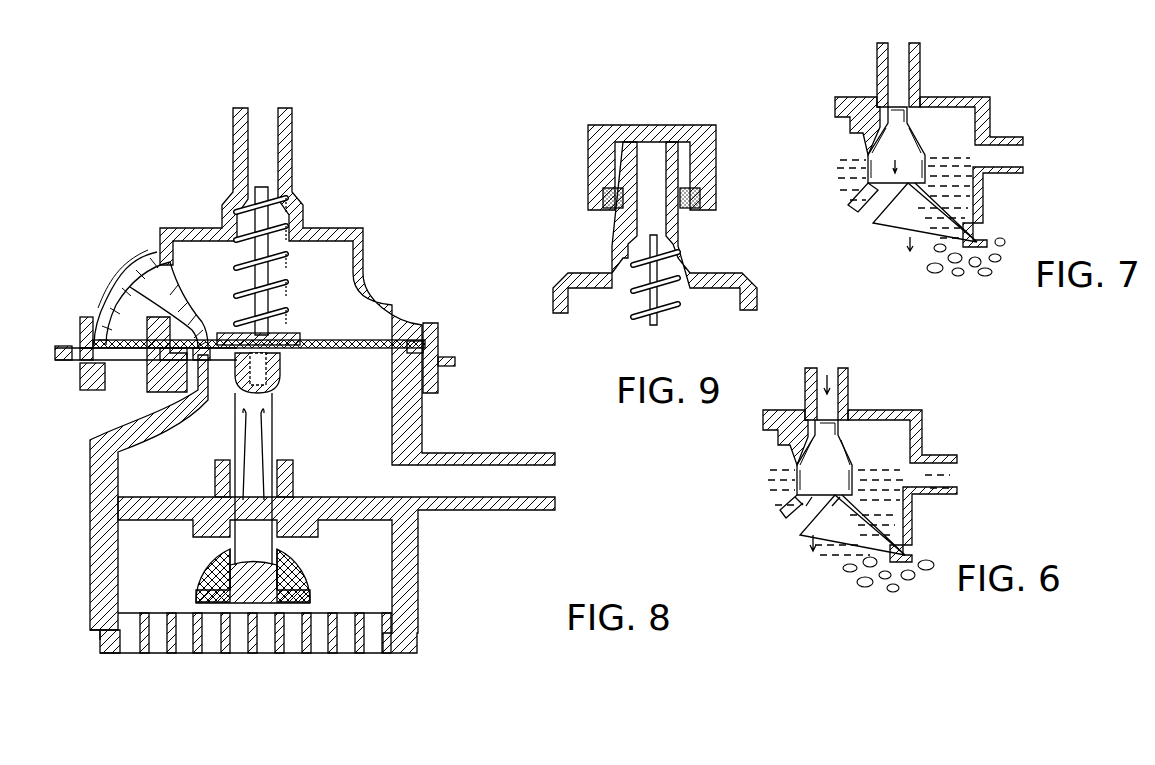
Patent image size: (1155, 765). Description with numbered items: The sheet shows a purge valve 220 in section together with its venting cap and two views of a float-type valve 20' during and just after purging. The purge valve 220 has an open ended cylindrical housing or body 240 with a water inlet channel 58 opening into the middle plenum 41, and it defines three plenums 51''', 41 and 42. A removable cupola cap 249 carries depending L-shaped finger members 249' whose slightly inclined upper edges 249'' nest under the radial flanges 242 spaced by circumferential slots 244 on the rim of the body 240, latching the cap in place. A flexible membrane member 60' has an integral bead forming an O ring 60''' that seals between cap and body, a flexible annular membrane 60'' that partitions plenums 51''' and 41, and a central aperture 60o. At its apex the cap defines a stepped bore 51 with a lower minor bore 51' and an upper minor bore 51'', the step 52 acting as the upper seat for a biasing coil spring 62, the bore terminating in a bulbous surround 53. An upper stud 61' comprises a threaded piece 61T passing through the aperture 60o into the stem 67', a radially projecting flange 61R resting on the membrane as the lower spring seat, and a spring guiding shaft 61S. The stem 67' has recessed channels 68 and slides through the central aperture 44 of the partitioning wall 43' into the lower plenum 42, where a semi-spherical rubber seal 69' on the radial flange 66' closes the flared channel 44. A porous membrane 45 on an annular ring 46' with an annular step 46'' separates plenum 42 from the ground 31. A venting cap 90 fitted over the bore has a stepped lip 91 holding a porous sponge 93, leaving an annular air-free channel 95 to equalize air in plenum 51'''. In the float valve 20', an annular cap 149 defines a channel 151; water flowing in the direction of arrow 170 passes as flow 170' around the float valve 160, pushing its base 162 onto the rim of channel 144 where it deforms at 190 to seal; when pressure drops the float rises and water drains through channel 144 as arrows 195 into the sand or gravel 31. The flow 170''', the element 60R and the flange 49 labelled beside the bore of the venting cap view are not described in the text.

In FIG. 7, the valve 20' is at (1001, 207).
In FIG. 6, the valve 20' is at (939, 524).
In FIG. 7, the sand or gravel 31 is at (1005, 240).
In FIG. 6, the sand or gravel 31 is at (845, 572).
In FIG. 8, the plenum 41 is at (214, 430).
In FIG. 8, the lower plenum 42 is at (160, 555).
In FIG. 8, the partitioning wall 43' is at (449, 547).
In FIG. 8, the central aperture 44 is at (290, 474).
In FIG. 8, the porous membrane 45 is at (185, 642).
In FIG. 8, the annular ring 46' is at (80, 655).
In FIG. 8, the annular step 46'' is at (67, 624).
In FIG. 9, the flange 49 is at (556, 286).
In FIG. 8, the stepped bore 51 is at (329, 212).
In FIG. 8, the lower minor bore 51' is at (192, 208).
In FIG. 9, the lower minor bore 51' is at (761, 269).
In FIG. 8, the upper minor bore 51'' is at (215, 229).
In FIG. 9, the upper minor bore 51'' is at (597, 268).
In FIG. 8, the plenum 51''' is at (216, 293).
In FIG. 8, the seat 52 is at (282, 200).
In FIG. 9, the seat 52 is at (690, 242).
In FIG. 8, the bulbous surround 53 is at (236, 118).
In FIG. 9, the bulbous surround 53 is at (622, 182).
In FIG. 8, the water inlet orifice or channel 58 is at (512, 505).
In FIG. 8, the flexible membrane member 60' is at (429, 314).
In FIG. 8, the flexible annular membrane 60'' is at (465, 405).
In FIG. 8, the O ring 60''' is at (483, 329).
In FIG. 8, the rim 60R is at (456, 350).
In FIG. 8, the central aperture 60o is at (284, 360).
In FIG. 8, the upper stud 61' is at (171, 280).
In FIG. 8, the radially projecting flange 61R is at (300, 335).
In FIG. 8, the spring guiding shaft 61S is at (236, 270).
In FIG. 9, the spring guiding shaft 61S is at (640, 303).
In FIG. 8, the threaded piece 61T is at (282, 378).
In FIG. 8, the biasing coil spring 62 is at (242, 205).
In FIG. 9, the biasing coil spring 62 is at (682, 306).
In FIG. 8, the radial flange 66' is at (172, 578).
In FIG. 8, the stem 67' is at (164, 481).
In FIG. 8, the recessed channels 68 is at (220, 456).
In FIG. 8, the semi-spherical annular rubber seal 69' is at (137, 564).
In FIG. 9, the venting cap 90 is at (687, 167).
In FIG. 9, the stepped radial lip 91 is at (702, 193).
In FIG. 9, the porous membrane or sponge 93 is at (722, 202).
In FIG. 9, the annular air-free channel 95 is at (700, 152).
In FIG. 7, the channel 144 is at (905, 210).
In FIG. 6, the channel 144 is at (830, 508).
In FIG. 7, the annular cap 149 is at (976, 104).
In FIG. 6, the annular cap 149 is at (915, 425).
In FIG. 7, the channel 151 is at (902, 55).
In FIG. 6, the channel 151 is at (832, 372).
In FIG. 7, the float valve 160 is at (882, 152).
In FIG. 6, the float valve 160 is at (800, 462).
In FIG. 7, the base or skirt 162 is at (876, 174).
In FIG. 6, the base or skirt 162 is at (800, 478).
In FIG. 6, the arrow 170 is at (864, 376).
In FIG. 6, the arrows 170' is at (771, 428).
In FIG. 6, the flow path 170''' is at (965, 449).
In FIG. 6, the deformation 190 is at (800, 498).
In FIG. 6, the arrows 195 is at (786, 512).
In FIG. 8, the purge valve 220 is at (420, 622).
In FIG. 8, the cylindrical housing or body 240 is at (410, 575).
In FIG. 8, the radial flanges 242 is at (62, 348).
In FIG. 8, the circumferential slots 244 is at (80, 322).
In FIG. 8, the removable cap 249 is at (442, 326).
In FIG. 8, the L-shaped finger members 249' is at (287, 380).
In FIG. 8, the upper edge 249'' is at (71, 394).